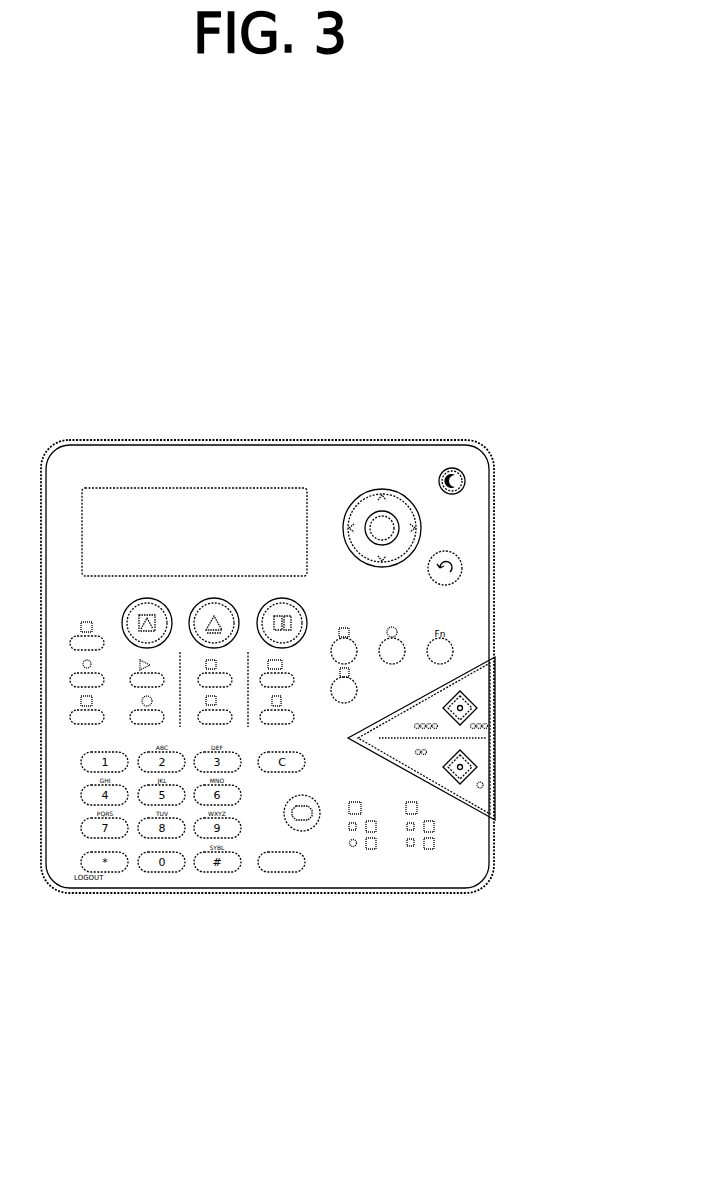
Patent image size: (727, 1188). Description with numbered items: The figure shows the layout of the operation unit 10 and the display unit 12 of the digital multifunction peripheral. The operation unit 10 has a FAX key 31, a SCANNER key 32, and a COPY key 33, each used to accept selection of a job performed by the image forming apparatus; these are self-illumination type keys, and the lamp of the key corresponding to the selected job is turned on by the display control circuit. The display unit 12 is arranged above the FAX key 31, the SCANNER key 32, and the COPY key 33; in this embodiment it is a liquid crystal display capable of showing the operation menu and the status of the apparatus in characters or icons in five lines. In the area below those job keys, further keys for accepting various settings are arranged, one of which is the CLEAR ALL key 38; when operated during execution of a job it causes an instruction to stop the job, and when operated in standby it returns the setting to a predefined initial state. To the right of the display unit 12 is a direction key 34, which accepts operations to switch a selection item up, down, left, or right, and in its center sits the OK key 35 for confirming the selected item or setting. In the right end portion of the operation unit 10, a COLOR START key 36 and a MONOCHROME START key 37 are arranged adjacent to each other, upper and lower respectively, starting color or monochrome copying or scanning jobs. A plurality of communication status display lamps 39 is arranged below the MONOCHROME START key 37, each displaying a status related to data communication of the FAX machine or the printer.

The operation unit 10 is at (316, 625).
The display unit 12 is at (224, 446).
The FAX key 31 is at (108, 482).
The SCANNER key 32 is at (176, 482).
The COPY key 33 is at (245, 482).
The direction key 34 is at (411, 441).
The OK key 35 is at (465, 518).
The COLOR START key 36 is at (488, 738).
The MONOCHROME START key 37 is at (522, 762).
The CLEAR ALL key 38 is at (299, 944).
The communication status display lamps 39 is at (419, 919).